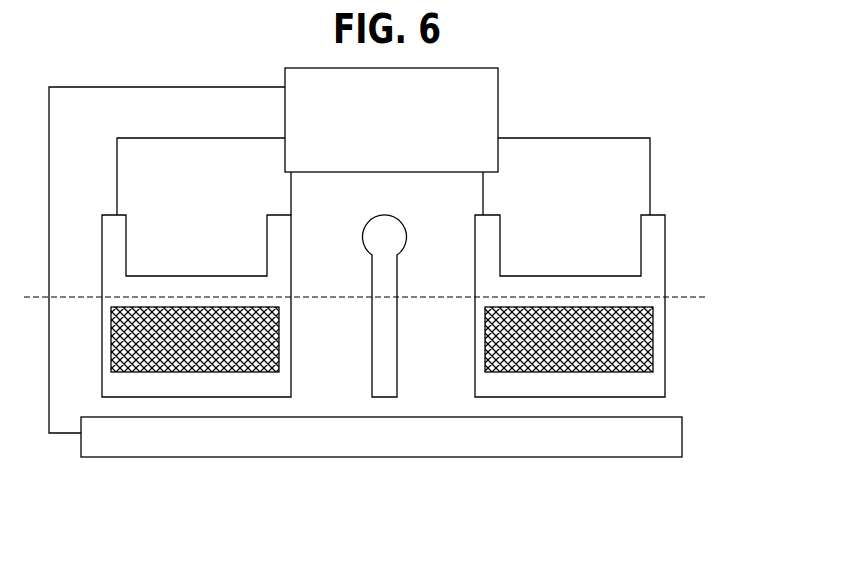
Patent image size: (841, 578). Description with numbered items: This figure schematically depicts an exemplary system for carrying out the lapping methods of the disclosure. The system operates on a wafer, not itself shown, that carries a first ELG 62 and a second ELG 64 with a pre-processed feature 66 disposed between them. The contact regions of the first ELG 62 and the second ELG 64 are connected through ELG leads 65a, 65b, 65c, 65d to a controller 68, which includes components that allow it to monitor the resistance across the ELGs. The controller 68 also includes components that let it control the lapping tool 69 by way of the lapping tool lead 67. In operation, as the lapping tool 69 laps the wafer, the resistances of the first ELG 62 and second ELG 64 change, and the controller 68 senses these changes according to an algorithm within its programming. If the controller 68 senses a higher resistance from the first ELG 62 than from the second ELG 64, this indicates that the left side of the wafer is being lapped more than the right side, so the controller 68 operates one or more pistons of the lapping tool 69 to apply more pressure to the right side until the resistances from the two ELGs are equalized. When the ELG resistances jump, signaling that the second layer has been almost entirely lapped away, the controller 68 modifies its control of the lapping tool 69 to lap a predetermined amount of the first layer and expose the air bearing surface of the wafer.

The first ELG 62 is at (292, 362).
The second ELG 64 is at (657, 277).
The ELG lead 65a is at (201, 176).
The ELG lead 65b is at (269, 193).
The ELG lead 65c is at (504, 193).
The ELG lead 65d is at (597, 176).
The pre-processed feature 66 is at (408, 238).
The lapping tool lead 67 is at (146, 87).
The controller 68 is at (498, 80).
The lapping tool 69 is at (682, 434).